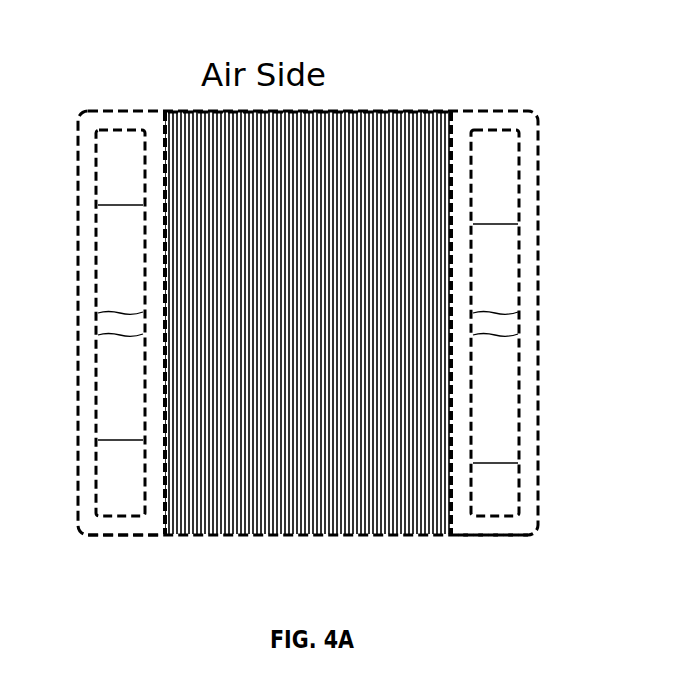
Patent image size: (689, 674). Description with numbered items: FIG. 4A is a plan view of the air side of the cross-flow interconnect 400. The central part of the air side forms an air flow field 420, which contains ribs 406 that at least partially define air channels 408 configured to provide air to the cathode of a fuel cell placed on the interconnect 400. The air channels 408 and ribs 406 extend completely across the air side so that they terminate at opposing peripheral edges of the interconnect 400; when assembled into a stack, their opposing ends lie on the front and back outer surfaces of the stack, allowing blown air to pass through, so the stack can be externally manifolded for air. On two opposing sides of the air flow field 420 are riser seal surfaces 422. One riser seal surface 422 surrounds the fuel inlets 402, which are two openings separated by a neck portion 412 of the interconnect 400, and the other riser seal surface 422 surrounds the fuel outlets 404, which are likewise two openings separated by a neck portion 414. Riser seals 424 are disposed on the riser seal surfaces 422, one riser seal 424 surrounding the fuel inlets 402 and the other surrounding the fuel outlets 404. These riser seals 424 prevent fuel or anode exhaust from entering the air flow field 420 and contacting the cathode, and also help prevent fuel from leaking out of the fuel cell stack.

The interconnect 400 is at (164, 61).
The fuel inlets 402 is at (495, 323).
The fuel outlets 404 is at (120, 323).
The ribs 406 is at (340, 185).
The air channels 408 is at (237, 472).
The neck portion 412 is at (495, 332).
The neck portion 414 is at (110, 312).
The air flow field 420 is at (308, 100).
The riser seal surfaces 422 is at (112, 530).
The riser seals 424 is at (108, 112).